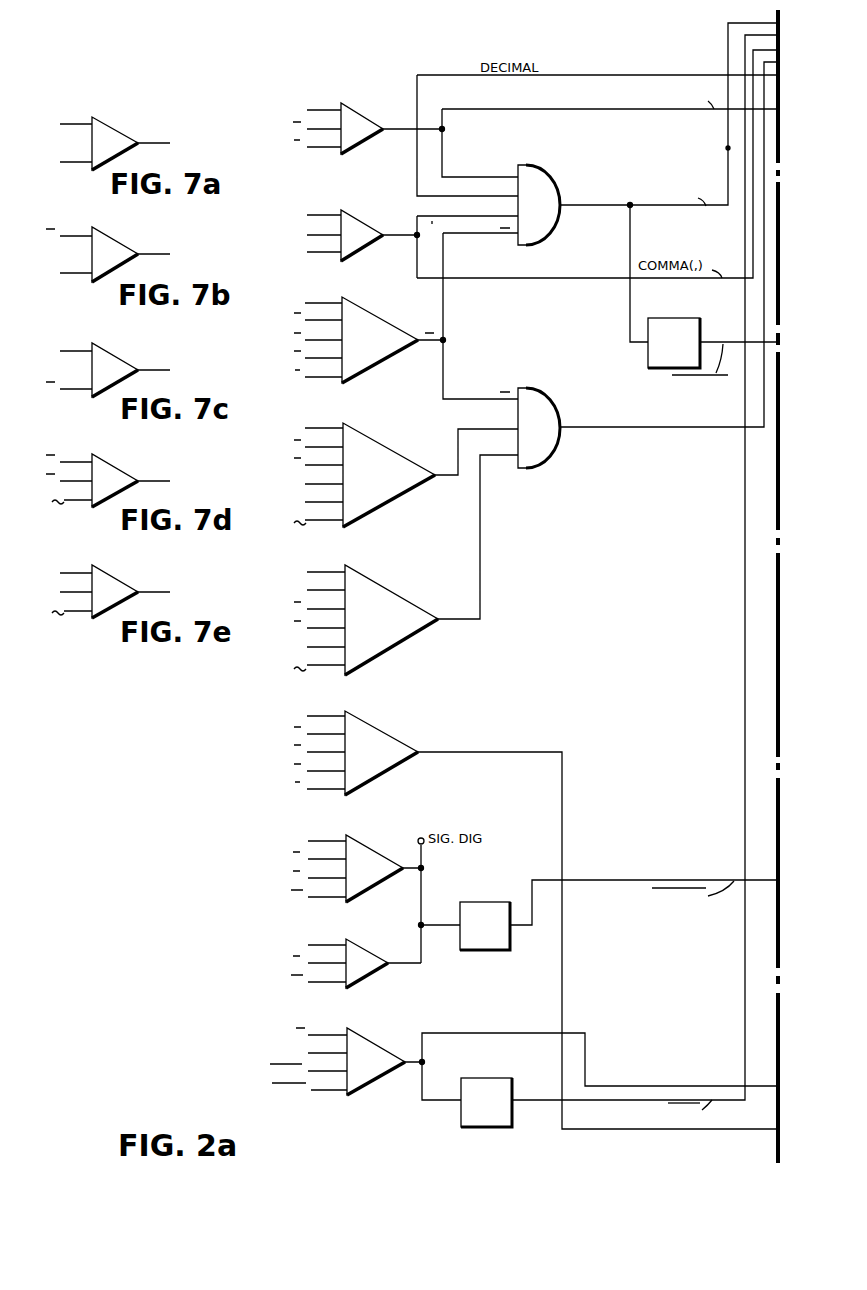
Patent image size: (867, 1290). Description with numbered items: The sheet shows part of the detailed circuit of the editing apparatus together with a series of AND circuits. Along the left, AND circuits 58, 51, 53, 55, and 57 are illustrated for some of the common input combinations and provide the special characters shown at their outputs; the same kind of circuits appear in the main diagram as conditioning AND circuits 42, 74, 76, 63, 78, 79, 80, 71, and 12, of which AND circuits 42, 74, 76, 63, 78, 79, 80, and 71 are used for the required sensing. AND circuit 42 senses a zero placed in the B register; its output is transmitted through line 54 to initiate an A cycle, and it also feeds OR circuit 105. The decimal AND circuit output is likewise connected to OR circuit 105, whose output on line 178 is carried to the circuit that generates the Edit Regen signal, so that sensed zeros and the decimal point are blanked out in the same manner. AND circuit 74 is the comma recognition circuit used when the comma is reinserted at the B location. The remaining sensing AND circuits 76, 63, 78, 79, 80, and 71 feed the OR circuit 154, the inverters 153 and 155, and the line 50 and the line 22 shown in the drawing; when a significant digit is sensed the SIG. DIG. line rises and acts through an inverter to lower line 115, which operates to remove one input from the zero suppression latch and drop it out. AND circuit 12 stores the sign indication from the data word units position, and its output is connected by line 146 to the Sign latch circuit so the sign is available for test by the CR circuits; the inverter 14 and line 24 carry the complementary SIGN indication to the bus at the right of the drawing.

In FIG. 7A, the AND circuit 58 is at (113, 133).
In FIG. 7B, the AND circuit 51 is at (114, 244).
In FIG. 7C, the AND circuit 53 is at (116, 362).
In FIG. 7D, the AND circuit 55 is at (116, 472).
In FIG. 7E, the AND circuit 57 is at (114, 582).
In FIG. 2A, the AND circuit 42 is at (360, 116).
In FIG. 2A, the comma recognition AND circuit 74 is at (360, 229).
In FIG. 2A, the AND circuit 76 is at (390, 327).
In FIG. 2A, the AND circuit 63 is at (390, 457).
In FIG. 2A, the AND circuit 78 is at (400, 605).
In FIG. 2A, the AND circuit 79 is at (393, 744).
In FIG. 2A, the AND circuit 80 is at (361, 848).
In FIG. 2A, the AND circuit 71 is at (365, 951).
In FIG. 2A, the AND circuit 12 is at (372, 1046).
In FIG. 2A, the OR circuit 105 is at (548, 186).
In FIG. 2A, the OR gate 154 is at (553, 452).
In FIG. 2A, the inverter 153 is at (694, 318).
In FIG. 2A, the inverter 155 is at (466, 910).
In FIG. 2A, the inverter 14 is at (474, 1079).
In FIG. 2A, the line 54 is at (514, 111).
In FIG. 2A, the line to AND 50 is at (495, 752).
In FIG. 2A, the line 115 is at (644, 882).
In FIG. 2A, the line 146 is at (676, 1088).
In FIG. 2A, the SIGN complement line 24 is at (744, 636).
In FIG. 2A, the CR- line 22 is at (711, 428).
In FIG. 2A, the line 178 is at (728, 148).